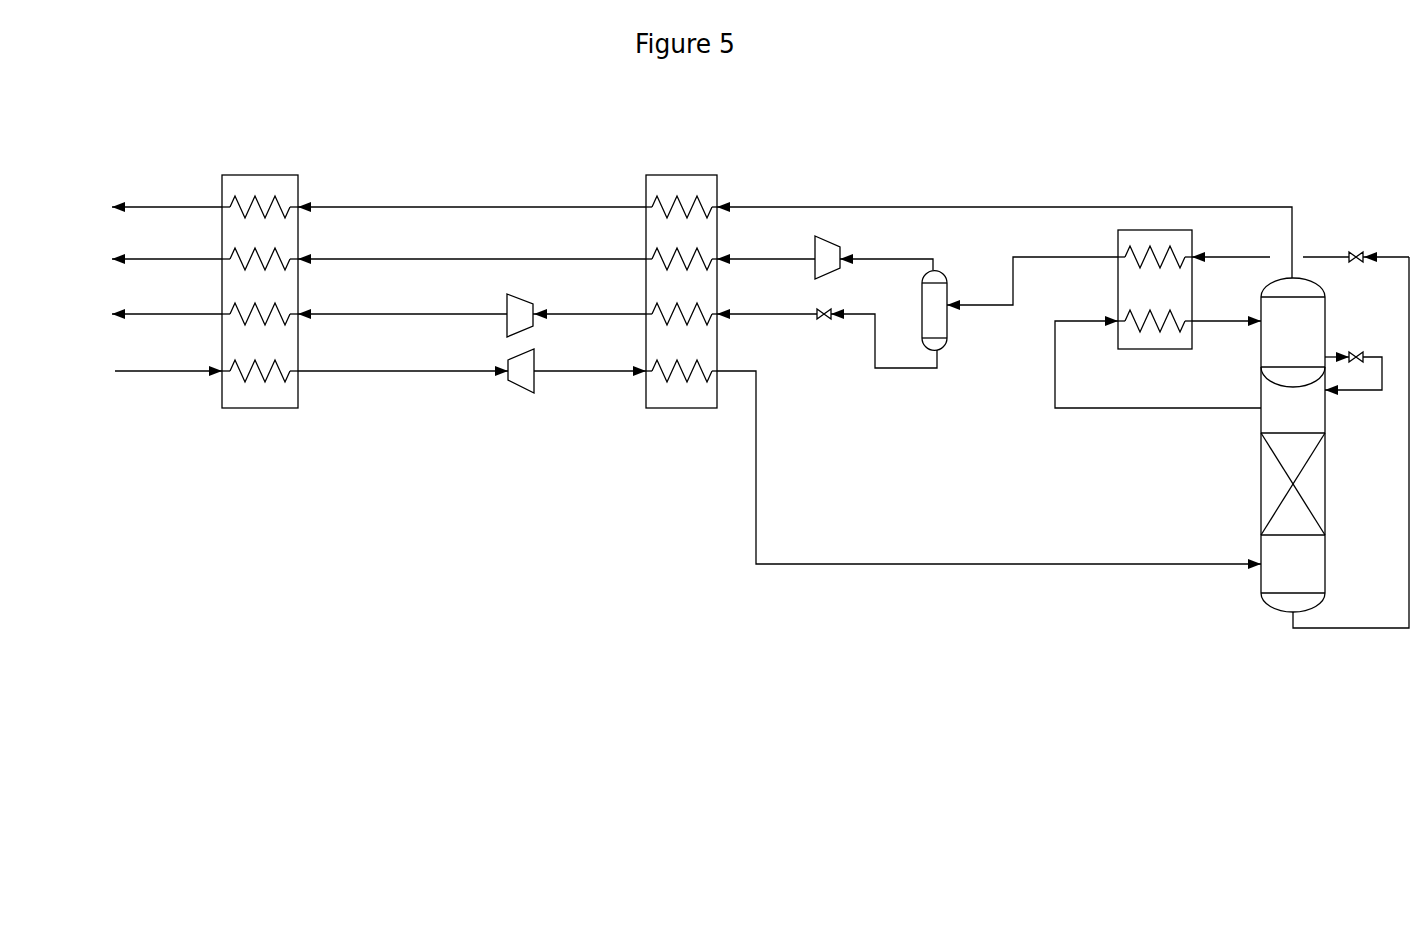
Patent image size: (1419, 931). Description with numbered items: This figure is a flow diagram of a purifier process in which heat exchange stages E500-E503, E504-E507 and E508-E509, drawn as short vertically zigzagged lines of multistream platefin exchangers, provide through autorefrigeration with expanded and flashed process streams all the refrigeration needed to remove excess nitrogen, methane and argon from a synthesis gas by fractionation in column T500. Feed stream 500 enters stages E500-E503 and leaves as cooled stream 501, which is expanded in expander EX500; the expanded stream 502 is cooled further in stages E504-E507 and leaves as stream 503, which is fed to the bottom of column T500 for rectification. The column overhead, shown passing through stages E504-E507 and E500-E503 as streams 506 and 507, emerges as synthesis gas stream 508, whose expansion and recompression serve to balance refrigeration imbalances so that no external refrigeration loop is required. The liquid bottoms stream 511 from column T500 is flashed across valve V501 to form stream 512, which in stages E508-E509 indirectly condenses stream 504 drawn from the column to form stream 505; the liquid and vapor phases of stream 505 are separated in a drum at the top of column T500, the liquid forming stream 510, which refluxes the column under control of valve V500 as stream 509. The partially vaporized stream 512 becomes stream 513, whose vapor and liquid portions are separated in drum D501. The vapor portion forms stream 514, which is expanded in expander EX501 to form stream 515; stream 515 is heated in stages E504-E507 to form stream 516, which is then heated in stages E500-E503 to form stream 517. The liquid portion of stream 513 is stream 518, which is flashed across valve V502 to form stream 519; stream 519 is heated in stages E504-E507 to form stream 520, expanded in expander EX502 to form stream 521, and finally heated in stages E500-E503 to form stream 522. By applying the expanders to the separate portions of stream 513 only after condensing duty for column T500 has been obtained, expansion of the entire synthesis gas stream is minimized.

The feed stream 500 is at (147, 371).
The cooled feed stream 501 is at (403, 363).
The expanded stream from EX500 502 is at (590, 363).
The column feed stream 503 is at (989, 470).
The condensing stream 504 is at (1158, 352).
The condensed stream 505 is at (1226, 311).
The column overhead vapor stream 506 is at (1004, 230).
The overhead stream after E504-E507 507 is at (472, 197).
The synthesis gas stream 508 is at (147, 207).
The reflux stream 509 is at (1353, 385).
The liquid reflux stream 510 is at (1330, 355).
The liquid bottoms stream 511 is at (1351, 442).
The flashed bottoms stream 512 is at (1300, 247).
The partially vaporized stream 513 is at (1032, 271).
The vapor portion stream 514 is at (886, 252).
The expanded vapor stream 515 is at (766, 249).
The heated vapor stream 516 is at (472, 249).
The warmed vapor product stream 517 is at (147, 259).
The liquid portion stream 518 is at (884, 338).
The flashed liquid stream 519 is at (767, 304).
The heated liquid-derived stream 520 is at (589, 306).
The expanded stream 521 is at (402, 306).
The warmed product stream 522 is at (147, 314).
The heat exchange stages E500-E503 is at (256, 281).
The heat exchange stages E504-E507 is at (679, 281).
The heat exchange stages E508-E509 is at (1160, 305).
The expander EX500 is at (525, 393).
The expander EX501 is at (833, 272).
The expander EX502 is at (517, 294).
The drum D501 is at (950, 331).
The fractionation column T500 is at (1261, 510).
The valve V500 is at (1365, 354).
The valve V501 is at (1357, 251).
The valve V502 is at (823, 321).